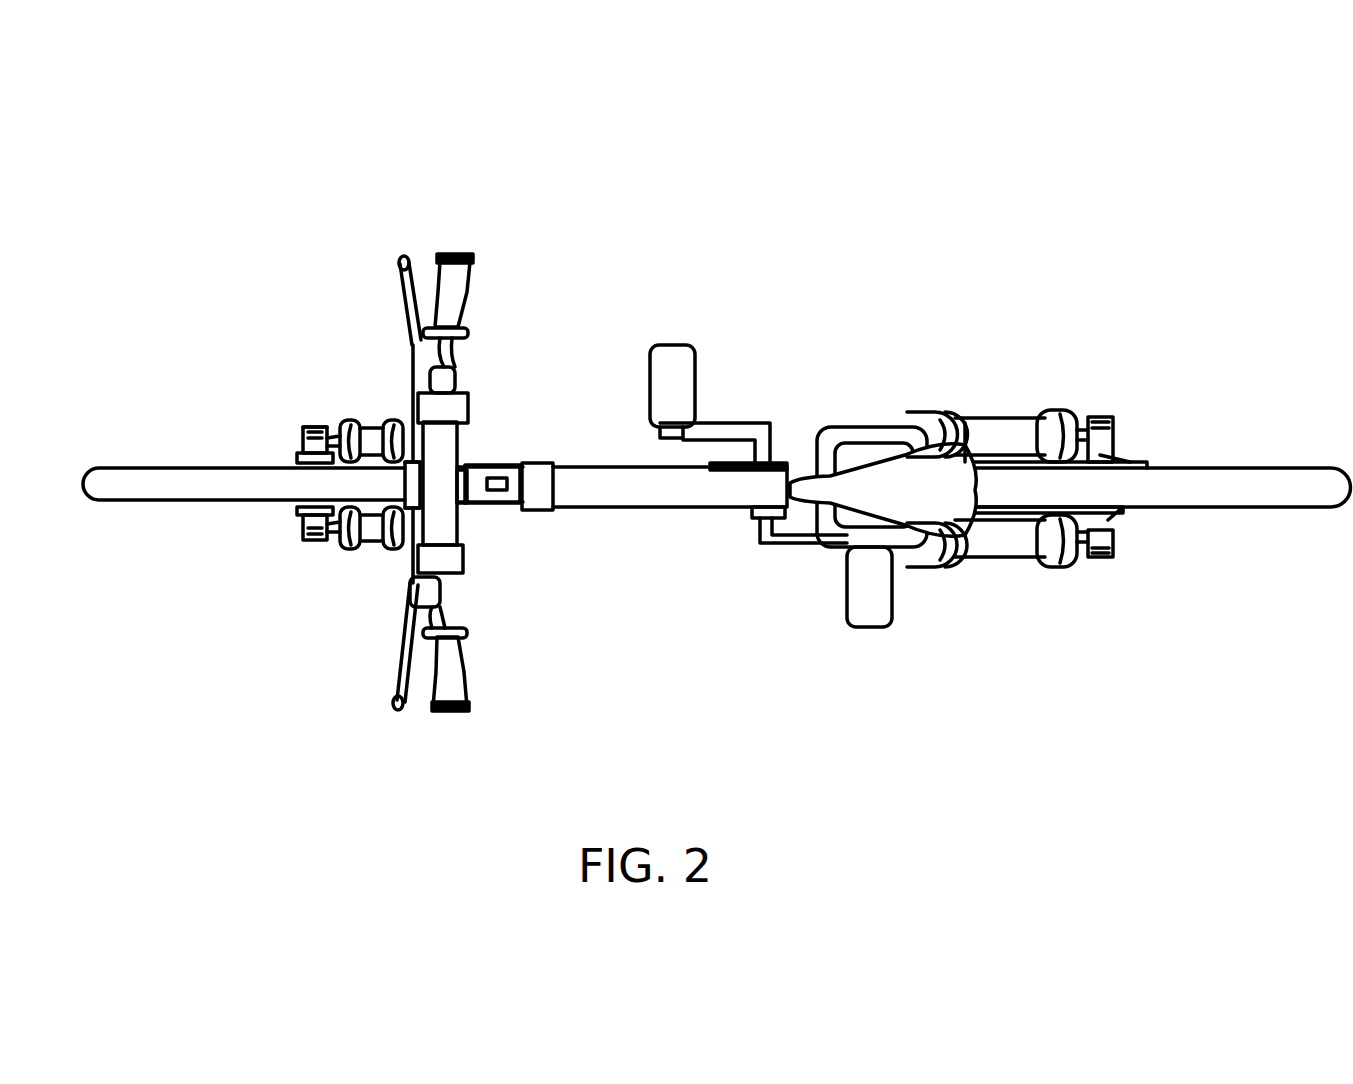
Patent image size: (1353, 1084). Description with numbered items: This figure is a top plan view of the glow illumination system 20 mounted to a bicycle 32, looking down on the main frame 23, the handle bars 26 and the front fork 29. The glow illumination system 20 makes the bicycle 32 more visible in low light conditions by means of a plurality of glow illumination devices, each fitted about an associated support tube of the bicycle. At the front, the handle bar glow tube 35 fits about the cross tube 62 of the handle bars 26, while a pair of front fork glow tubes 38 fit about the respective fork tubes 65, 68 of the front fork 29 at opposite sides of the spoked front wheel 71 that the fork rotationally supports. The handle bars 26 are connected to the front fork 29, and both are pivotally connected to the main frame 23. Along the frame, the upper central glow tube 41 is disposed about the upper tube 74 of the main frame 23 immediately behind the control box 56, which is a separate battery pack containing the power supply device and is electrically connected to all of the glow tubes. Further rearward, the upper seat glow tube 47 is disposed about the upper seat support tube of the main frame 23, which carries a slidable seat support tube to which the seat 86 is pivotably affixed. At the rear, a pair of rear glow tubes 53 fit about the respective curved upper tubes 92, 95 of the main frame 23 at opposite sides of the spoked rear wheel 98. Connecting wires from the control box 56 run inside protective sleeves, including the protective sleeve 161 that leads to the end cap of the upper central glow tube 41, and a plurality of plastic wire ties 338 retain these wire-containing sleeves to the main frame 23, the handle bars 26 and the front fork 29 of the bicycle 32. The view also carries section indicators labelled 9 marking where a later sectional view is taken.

The glow illumination system 20 is at (614, 320).
The main frame 23 is at (861, 434).
The handle bars 26 is at (492, 320).
The front fork 29 is at (330, 393).
The bicycle 32 is at (1024, 263).
The handle bar glow tube 35 is at (462, 440).
The front fork glow tubes 38 is at (377, 418).
The upper central glow tube 41 is at (638, 512).
The upper seat glow tube 47 is at (853, 516).
The rear glow tubes 53 is at (1004, 414).
The control box 56 is at (523, 456).
The cross tube 62 is at (462, 380).
The fork tube 65 is at (305, 520).
The fork tube 68 is at (303, 440).
The spoked front wheel 71 is at (122, 502).
The upper tube 74 is at (810, 447).
The seat 86 is at (972, 423).
The curved upper tube 92 is at (847, 517).
The curved upper tube 95 is at (837, 423).
The spoked rear wheel 98 is at (1222, 466).
The protective sleeve 161 is at (482, 506).
The plastic wire ties 338 is at (813, 420).
The section view 9 is at (346, 654).